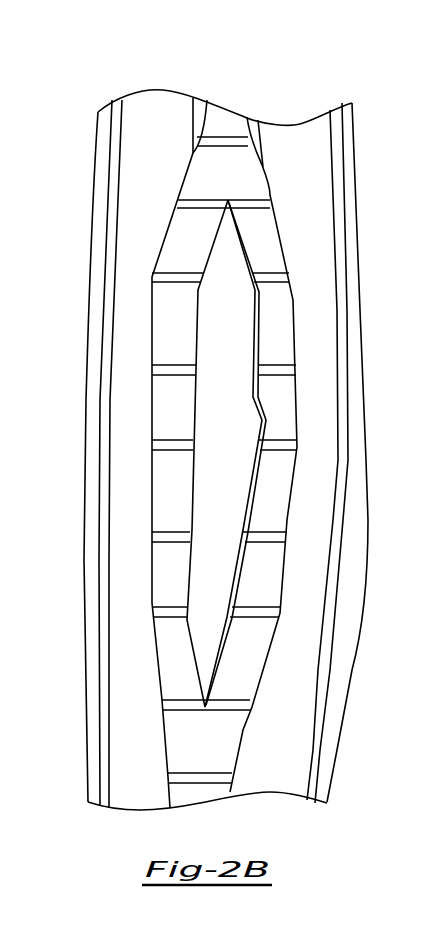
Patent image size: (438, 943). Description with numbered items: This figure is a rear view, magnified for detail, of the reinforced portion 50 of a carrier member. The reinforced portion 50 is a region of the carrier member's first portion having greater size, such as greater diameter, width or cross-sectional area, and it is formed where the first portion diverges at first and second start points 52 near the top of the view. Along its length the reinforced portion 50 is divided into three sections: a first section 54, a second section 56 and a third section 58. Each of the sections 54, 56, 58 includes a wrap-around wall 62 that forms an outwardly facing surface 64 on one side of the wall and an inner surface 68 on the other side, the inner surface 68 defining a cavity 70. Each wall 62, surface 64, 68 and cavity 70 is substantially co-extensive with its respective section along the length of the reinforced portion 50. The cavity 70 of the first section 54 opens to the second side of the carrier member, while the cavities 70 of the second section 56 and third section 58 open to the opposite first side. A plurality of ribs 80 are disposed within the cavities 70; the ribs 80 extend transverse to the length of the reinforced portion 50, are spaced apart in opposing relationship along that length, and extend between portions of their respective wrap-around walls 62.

The reinforced portion 50 is at (138, 486).
The start points 52 is at (170, 173).
The first section 54 is at (215, 298).
The second section 56 is at (278, 395).
The third section 58 is at (183, 350).
The wall 62 is at (177, 568).
The outwardly facing surface 64 is at (232, 428).
The inner surface 68 is at (180, 325).
The cavity 70 is at (172, 662).
The ribs 80 is at (180, 697).